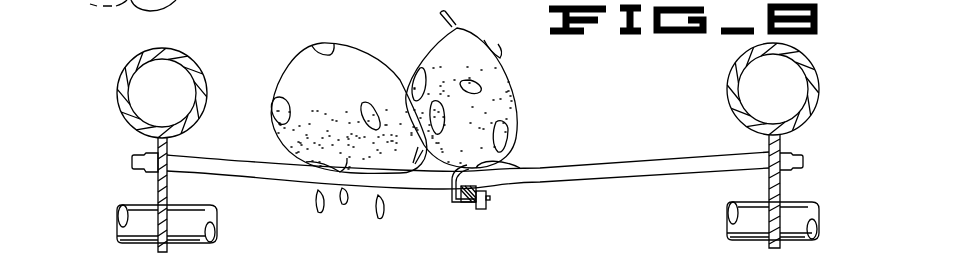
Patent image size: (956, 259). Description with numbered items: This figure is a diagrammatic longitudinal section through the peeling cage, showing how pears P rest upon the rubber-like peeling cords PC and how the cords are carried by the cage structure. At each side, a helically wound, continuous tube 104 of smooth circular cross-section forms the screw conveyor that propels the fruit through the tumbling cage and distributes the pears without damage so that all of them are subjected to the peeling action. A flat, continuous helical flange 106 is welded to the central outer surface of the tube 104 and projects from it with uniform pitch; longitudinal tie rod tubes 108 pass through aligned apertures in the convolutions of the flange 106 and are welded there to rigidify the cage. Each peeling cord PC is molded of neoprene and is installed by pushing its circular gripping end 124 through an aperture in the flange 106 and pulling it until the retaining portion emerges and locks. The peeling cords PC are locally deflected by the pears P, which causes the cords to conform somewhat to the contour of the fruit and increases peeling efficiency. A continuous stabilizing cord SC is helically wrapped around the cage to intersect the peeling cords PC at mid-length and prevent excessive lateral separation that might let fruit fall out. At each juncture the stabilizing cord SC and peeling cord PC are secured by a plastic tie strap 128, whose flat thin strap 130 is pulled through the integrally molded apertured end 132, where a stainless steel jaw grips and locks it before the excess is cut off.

The helical tube 104 is at (117, 91).
The helical flange 106 is at (158, 185).
The gripping end 124 is at (132, 160).
The tie rod tube 108 is at (125, 230).
The plastic tie strap 128 is at (455, 200).
The strap 130 is at (490, 153).
The apertured end 132 is at (483, 197).
The pears P is at (425, 41).
The peeling cord PC is at (624, 166).
The stabilizing cord SC is at (468, 208).